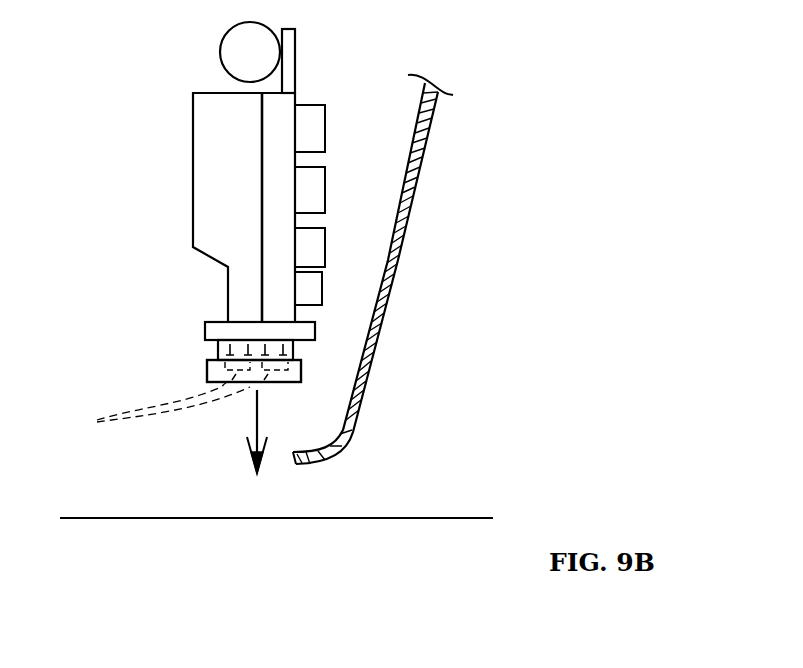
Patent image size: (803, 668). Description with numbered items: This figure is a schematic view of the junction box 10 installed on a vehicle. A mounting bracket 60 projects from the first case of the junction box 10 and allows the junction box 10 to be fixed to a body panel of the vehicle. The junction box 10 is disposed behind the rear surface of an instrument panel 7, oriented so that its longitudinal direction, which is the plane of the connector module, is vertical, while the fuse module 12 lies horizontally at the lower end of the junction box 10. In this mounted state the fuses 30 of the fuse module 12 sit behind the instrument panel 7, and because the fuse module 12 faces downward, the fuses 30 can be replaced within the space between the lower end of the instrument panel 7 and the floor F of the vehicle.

The junction box 10 is at (190, 195).
The mounting bracket 60 is at (295, 48).
The instrument panel 7 is at (425, 160).
The fuse module 12 is at (301, 368).
The fuses 30 is at (158, 413).
The floor F is at (423, 518).